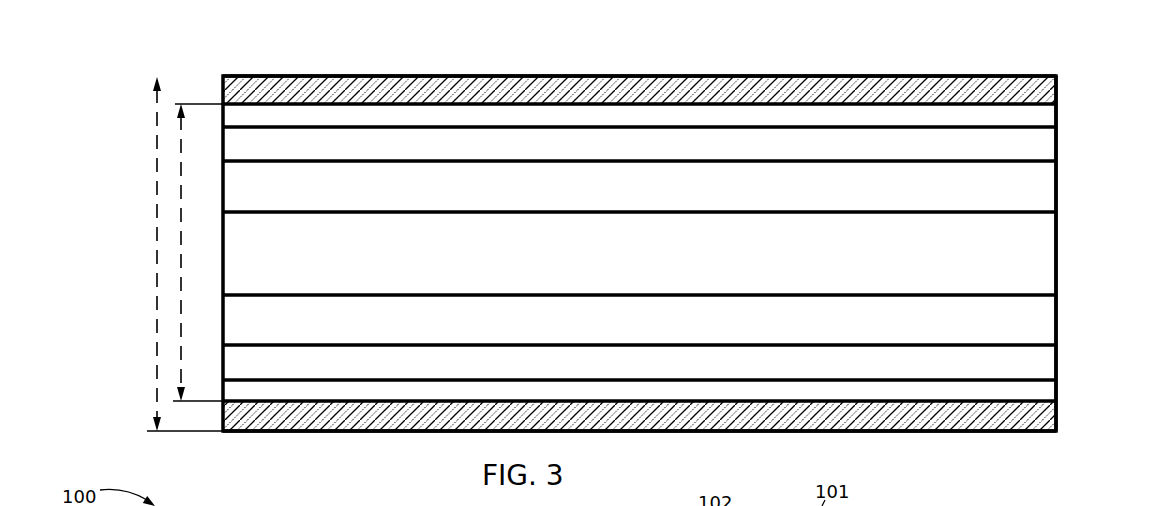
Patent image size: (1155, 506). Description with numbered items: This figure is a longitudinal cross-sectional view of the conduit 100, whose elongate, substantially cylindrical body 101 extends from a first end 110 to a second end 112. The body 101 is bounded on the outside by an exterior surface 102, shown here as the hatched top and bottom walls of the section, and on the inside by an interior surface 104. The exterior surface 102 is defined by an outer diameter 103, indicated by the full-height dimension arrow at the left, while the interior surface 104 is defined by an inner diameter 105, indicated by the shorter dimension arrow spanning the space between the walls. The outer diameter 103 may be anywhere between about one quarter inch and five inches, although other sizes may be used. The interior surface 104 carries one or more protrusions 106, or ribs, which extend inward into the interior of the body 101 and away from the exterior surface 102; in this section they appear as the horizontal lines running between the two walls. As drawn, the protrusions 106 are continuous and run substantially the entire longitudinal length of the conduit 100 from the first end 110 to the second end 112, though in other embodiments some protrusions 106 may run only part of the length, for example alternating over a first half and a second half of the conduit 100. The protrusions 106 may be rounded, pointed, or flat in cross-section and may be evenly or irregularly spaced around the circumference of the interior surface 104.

The conduit 100 is at (127, 116).
The body 101 is at (805, 97).
The exterior surface 102 is at (701, 63).
The outer diameter 103 is at (157, 328).
The interior surface 104 is at (836, 386).
The inner diameter 105 is at (197, 252).
The protrusions 106 is at (653, 378).
The first end 110 is at (223, 410).
The second end 112 is at (1059, 418).